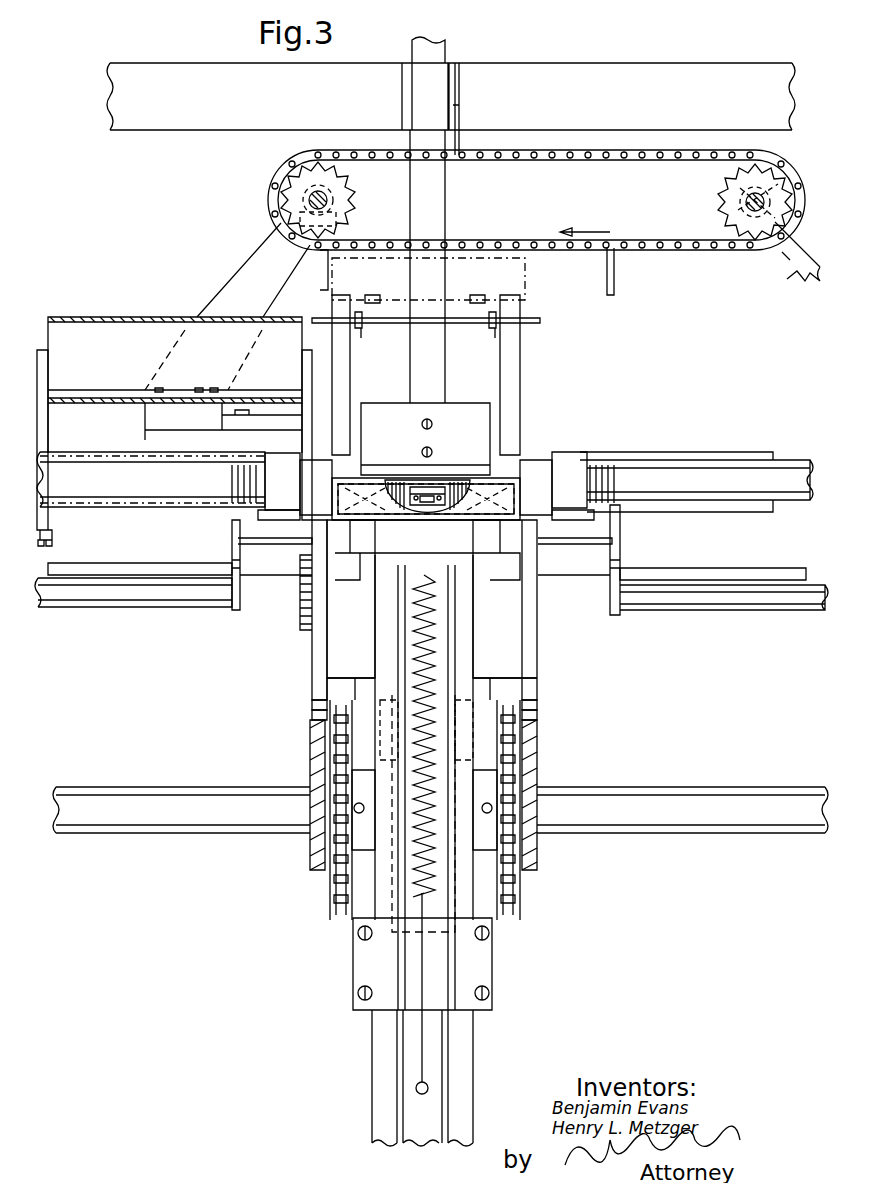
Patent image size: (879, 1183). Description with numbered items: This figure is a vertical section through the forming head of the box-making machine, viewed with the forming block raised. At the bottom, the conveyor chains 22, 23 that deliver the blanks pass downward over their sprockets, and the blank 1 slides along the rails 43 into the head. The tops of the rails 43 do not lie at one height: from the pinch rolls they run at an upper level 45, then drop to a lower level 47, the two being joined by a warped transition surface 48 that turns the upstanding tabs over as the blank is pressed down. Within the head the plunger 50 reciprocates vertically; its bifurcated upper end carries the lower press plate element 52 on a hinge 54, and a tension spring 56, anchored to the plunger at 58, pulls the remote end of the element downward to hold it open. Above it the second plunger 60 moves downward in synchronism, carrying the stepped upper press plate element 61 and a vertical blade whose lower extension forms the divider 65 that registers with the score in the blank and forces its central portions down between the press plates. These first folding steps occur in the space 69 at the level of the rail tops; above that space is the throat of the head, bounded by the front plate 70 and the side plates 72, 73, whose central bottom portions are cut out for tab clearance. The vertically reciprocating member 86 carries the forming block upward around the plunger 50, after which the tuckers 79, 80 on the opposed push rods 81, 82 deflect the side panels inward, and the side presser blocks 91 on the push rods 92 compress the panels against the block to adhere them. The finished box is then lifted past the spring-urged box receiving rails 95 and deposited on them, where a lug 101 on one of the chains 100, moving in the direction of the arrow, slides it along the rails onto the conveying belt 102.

The blank 1 is at (468, 485).
The conveyor chain 22 is at (520, 898).
The conveyor chain 23 is at (330, 901).
The rails 43 is at (554, 739).
The rail top level 45 is at (554, 702).
The lower rail level 47 is at (562, 718).
The warped transition surface 48 is at (330, 703).
The plunger 50 is at (435, 620).
The press plate element 52 is at (446, 449).
The hinge 54 is at (418, 493).
The tension spring 56 is at (430, 658).
The spring anchor 58 is at (428, 1087).
The second plunger 60 is at (444, 362).
The upper press plate element 61 is at (391, 480).
The divider 65 is at (368, 560).
The space 69 is at (490, 700).
The front plate 70 is at (351, 599).
The side plate 72 is at (308, 645).
The side plate 73 is at (538, 630).
The tucker 79 is at (541, 543).
The tucker 80 is at (571, 530).
The push rod 81 is at (197, 563).
The push rod 82 is at (737, 565).
The vertically reciprocating member 86 is at (457, 1045).
The side presser block 91 is at (426, 487).
The push rod 92 is at (732, 460).
The box receiving rail 95 is at (530, 323).
The chain 100 is at (657, 226).
The lug 101 is at (640, 273).
The conveying belt 102 is at (148, 384).